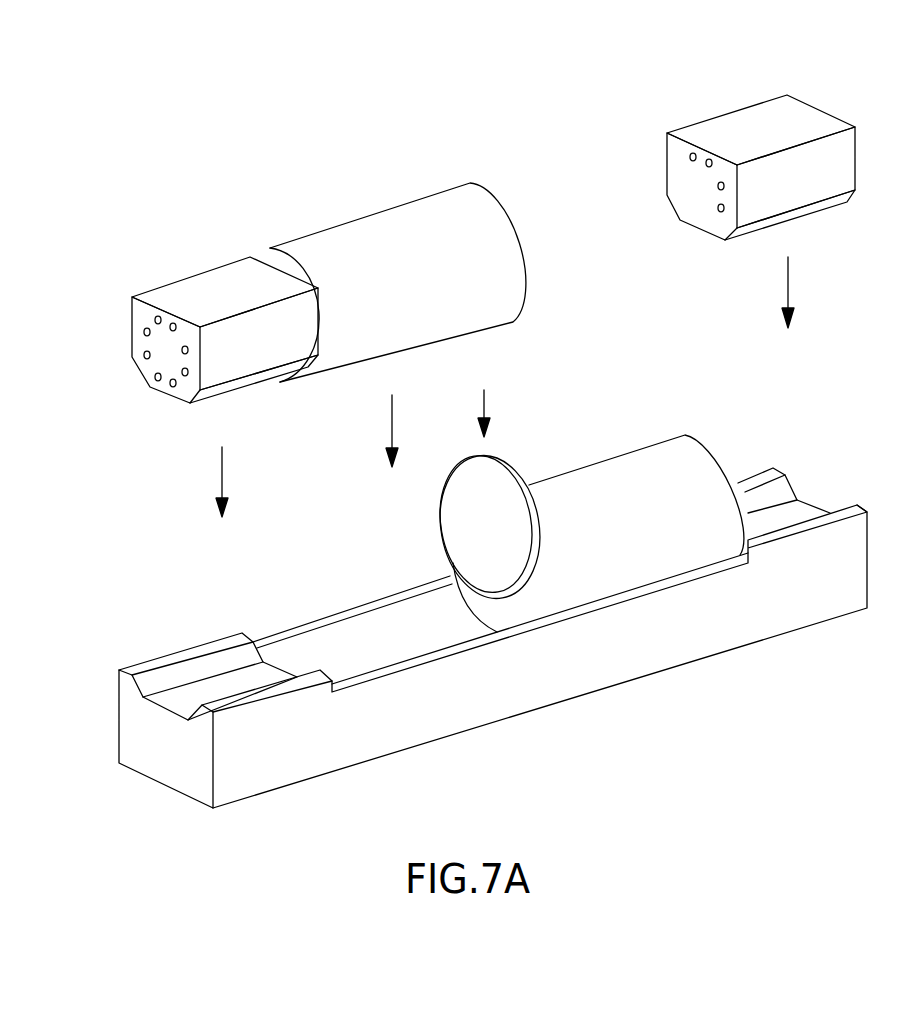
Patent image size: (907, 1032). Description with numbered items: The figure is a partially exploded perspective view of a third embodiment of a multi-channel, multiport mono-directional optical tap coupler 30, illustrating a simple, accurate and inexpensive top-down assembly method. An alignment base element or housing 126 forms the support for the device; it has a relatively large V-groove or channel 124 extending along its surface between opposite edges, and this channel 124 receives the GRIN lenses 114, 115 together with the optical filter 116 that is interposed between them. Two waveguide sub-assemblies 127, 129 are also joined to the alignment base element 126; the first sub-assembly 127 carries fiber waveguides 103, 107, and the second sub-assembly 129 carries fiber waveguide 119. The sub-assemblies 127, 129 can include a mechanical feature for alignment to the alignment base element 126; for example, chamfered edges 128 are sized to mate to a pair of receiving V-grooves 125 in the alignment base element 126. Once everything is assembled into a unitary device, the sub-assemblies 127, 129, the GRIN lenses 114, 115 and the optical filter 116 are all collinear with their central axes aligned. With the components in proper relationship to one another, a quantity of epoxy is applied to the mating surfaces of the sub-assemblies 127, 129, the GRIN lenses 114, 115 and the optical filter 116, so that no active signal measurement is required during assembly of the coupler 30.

The multi-channel, multiport optical tap coupler 30 is at (158, 146).
The fiber waveguide 103 is at (144, 332).
The fiber waveguide 107 is at (170, 385).
The GRIN lens 114 is at (370, 223).
The GRIN lens 115 is at (668, 453).
The optical filter 116 is at (478, 515).
The fiber waveguide 119 is at (710, 220).
The V-groove or channel 124 is at (368, 638).
The receiving V-grooves 125 is at (185, 697).
The alignment base element 126 is at (507, 673).
The waveguide sub-assembly 127 is at (197, 287).
The chamfered edges 128 is at (227, 388).
The waveguide sub-assembly 129 is at (792, 187).